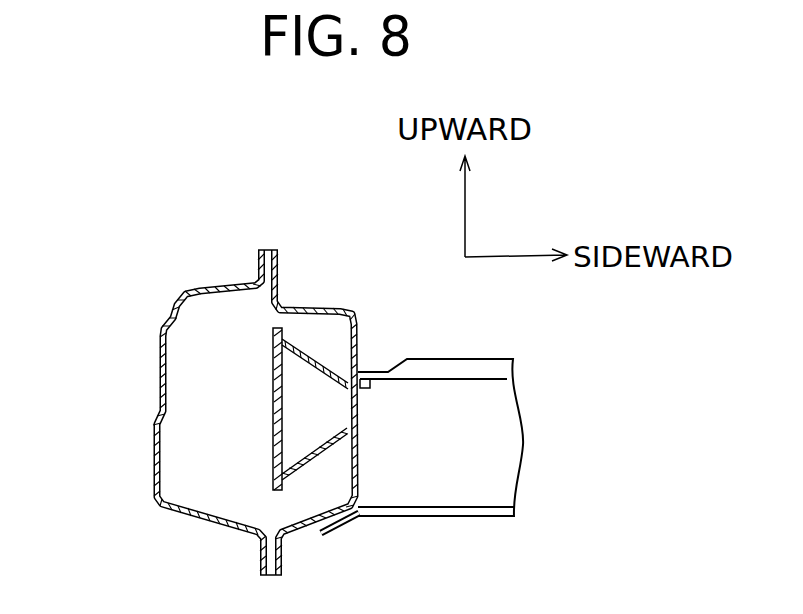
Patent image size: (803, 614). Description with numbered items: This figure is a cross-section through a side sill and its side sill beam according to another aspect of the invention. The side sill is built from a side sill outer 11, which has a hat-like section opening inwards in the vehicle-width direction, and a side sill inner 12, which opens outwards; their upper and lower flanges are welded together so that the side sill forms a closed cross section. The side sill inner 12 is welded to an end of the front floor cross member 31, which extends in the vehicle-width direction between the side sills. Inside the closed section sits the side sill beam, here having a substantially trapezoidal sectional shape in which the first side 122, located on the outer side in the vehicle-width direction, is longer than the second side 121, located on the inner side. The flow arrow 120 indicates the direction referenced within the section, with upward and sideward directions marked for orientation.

The side sill outer 11 is at (213, 285).
The side sill inner 12 is at (323, 310).
The front floor cross member 31 is at (487, 438).
The flow passage 120 is at (243, 441).
The second side 121 is at (352, 404).
The first side 122 is at (273, 391).